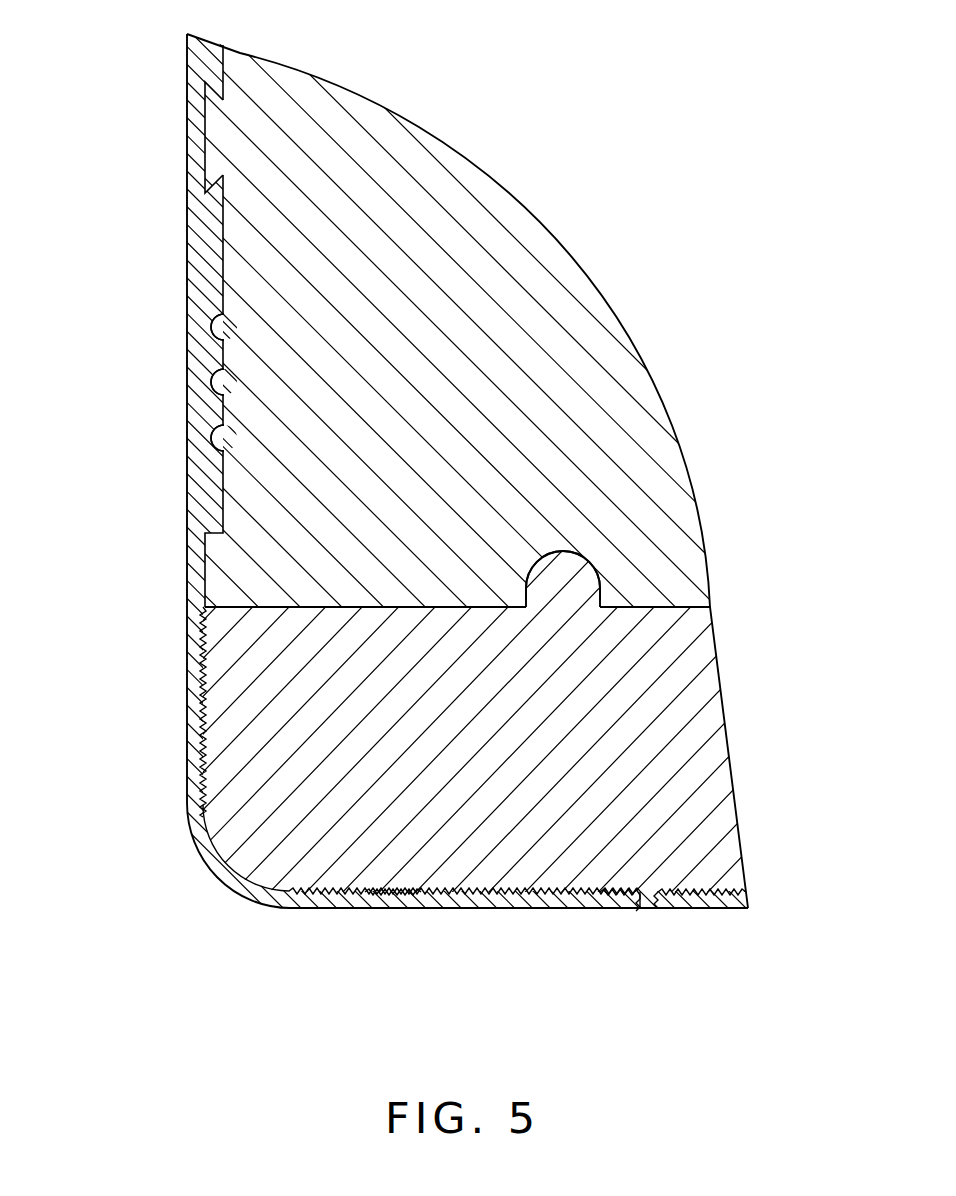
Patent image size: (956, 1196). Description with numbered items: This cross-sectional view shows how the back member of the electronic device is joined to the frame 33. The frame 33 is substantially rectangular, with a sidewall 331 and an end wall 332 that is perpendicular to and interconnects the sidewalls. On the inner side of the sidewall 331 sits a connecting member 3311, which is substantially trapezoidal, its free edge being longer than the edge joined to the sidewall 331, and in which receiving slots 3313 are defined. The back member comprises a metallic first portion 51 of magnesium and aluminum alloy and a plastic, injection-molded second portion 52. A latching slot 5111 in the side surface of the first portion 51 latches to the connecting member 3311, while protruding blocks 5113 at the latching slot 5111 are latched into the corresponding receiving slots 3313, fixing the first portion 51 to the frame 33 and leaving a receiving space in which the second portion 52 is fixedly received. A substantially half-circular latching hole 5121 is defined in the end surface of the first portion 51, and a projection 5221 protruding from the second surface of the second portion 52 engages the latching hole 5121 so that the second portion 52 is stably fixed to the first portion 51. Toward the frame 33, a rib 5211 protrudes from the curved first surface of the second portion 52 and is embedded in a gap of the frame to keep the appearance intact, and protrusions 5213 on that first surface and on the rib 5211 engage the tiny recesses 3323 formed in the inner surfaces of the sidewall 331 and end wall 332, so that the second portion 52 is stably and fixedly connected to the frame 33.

The first portion 51 is at (555, 373).
The second portion 52 is at (693, 682).
The frame 33 is at (197, 680).
The sidewall 331 is at (203, 268).
The end wall 332 is at (487, 900).
The connecting member 3311 is at (213, 152).
The receiving slot 3313 is at (215, 380).
The recess 3323 is at (610, 895).
The latching slot 5111 is at (215, 95).
The protruding block 5113 is at (213, 435).
The latching hole 5121 is at (594, 581).
The rib 5211 is at (652, 905).
The protrusion 5213 is at (390, 900).
The projection 5221 is at (560, 577).